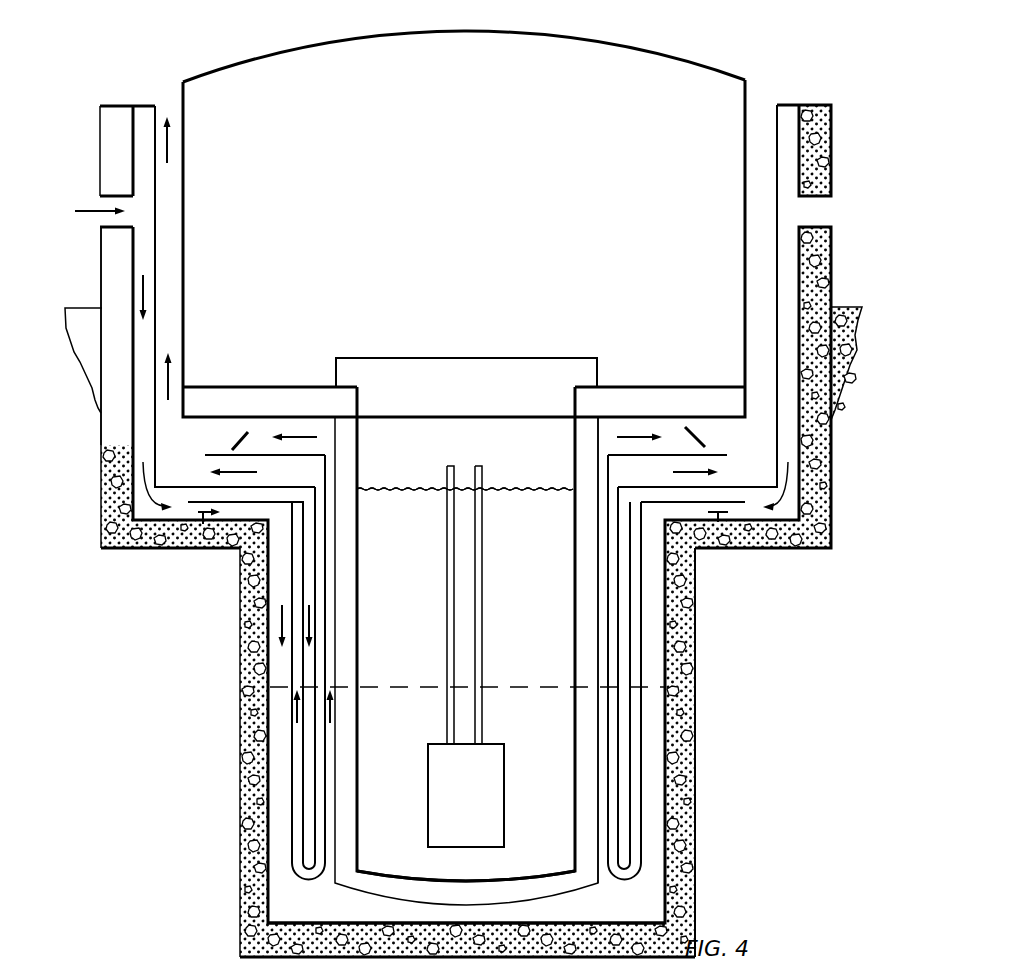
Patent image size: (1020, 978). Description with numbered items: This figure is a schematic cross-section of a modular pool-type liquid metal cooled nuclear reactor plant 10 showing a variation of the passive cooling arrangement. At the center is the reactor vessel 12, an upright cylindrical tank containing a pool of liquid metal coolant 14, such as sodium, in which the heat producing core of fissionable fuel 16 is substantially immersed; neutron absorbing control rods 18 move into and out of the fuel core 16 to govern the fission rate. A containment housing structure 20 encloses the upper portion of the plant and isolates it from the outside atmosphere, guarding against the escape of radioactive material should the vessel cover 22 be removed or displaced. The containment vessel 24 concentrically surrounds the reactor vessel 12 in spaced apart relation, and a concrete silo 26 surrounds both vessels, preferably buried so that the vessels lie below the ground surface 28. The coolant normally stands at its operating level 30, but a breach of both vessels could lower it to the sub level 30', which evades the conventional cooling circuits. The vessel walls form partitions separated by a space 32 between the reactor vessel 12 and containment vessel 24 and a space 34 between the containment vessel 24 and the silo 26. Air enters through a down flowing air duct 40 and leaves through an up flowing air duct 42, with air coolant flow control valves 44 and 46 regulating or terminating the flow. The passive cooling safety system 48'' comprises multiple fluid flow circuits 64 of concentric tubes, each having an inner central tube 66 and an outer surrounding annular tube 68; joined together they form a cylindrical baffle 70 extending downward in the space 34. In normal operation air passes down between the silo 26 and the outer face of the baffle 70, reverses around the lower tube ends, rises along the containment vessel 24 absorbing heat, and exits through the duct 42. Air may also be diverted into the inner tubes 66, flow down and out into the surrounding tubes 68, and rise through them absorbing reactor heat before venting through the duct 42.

The nuclear reactor plant 10 is at (672, 47).
The reactor vessel 12 is at (575, 456).
The liquid metal coolant 14 is at (528, 810).
The core of fissionable fuel 16 is at (455, 810).
The control rods 18 is at (483, 578).
The containment housing structure 20 is at (362, 42).
The vessel cover 22 is at (535, 357).
The containment vessel 24 is at (600, 613).
The concrete silo 26 is at (694, 668).
The ground surface 28 is at (849, 373).
The normal operating level 30 is at (465, 462).
The sub level 30' is at (467, 662).
The space 32 is at (587, 808).
The space 34 is at (642, 900).
The down flowing air duct 40 is at (142, 450).
The up flowing air duct 42 is at (172, 312).
The air coolant flow control valve 44 is at (718, 514).
The air coolant flow control valve 46 is at (686, 426).
The passive cooling safety system 48'' is at (409, 682).
The fluid flow circuits 64 is at (327, 627).
The inner central tube 66 is at (317, 547).
The outer surrounding annular tube 68 is at (327, 593).
The cylindrical baffle 70 is at (305, 878).